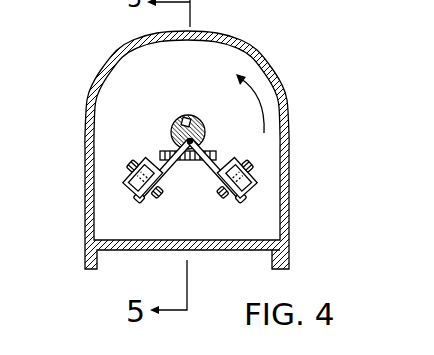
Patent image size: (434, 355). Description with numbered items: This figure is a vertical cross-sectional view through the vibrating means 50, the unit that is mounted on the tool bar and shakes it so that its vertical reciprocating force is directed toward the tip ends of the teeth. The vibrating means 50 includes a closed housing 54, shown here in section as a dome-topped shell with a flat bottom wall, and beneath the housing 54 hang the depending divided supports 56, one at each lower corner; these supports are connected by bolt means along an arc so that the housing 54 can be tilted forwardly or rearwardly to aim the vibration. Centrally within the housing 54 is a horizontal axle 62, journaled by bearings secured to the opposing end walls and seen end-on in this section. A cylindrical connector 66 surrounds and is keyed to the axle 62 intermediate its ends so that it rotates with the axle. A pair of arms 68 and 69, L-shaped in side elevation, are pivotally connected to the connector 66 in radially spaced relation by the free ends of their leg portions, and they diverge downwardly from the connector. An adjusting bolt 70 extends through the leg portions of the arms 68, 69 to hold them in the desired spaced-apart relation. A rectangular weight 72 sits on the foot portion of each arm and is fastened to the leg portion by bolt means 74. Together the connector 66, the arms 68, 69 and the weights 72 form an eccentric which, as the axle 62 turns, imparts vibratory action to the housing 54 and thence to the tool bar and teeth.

The vibrating means 50 is at (181, 155).
The closed housing 54 is at (85, 125).
The depending divided support 56 is at (85, 265).
The horizontal axle 62 is at (173, 128).
The cylindrical connector 66 is at (190, 119).
The L-shaped arm 68 is at (160, 161).
The L-shaped arm 69 is at (201, 141).
The adjusting bolt 70 is at (184, 160).
The weight 72 is at (178, 195).
The bolt means 74 is at (138, 177).